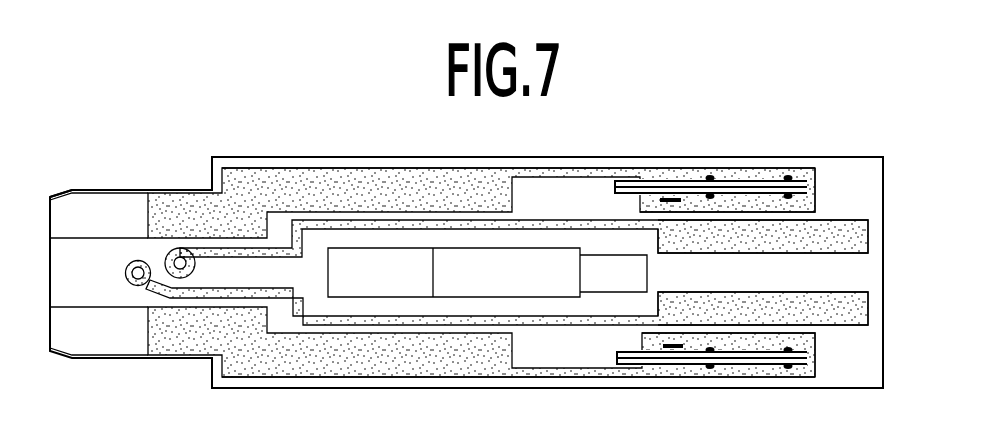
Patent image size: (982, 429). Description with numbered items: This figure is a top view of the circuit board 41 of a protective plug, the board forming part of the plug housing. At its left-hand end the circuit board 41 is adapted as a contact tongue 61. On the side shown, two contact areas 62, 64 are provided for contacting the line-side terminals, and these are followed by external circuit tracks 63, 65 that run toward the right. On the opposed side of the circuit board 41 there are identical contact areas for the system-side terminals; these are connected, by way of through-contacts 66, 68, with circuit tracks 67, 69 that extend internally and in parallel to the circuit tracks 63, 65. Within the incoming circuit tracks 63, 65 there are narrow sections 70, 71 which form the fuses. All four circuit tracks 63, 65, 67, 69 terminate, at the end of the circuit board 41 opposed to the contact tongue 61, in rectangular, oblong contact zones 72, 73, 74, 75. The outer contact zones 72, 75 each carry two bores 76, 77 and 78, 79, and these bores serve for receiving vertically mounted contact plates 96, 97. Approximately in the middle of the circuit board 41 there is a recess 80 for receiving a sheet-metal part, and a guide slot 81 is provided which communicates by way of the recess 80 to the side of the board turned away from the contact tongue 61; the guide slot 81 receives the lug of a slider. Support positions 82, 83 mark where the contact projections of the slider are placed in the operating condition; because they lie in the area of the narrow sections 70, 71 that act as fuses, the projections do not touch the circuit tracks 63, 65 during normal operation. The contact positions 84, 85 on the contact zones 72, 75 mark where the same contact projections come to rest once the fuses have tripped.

The circuit board 41 is at (853, 158).
The contact tongue 61 is at (170, 160).
The contact area 62 is at (100, 203).
The external circuit track 63 is at (298, 187).
The contact area 64 is at (110, 338).
The external circuit track 65 is at (315, 363).
The through-contact 66 is at (193, 268).
The circuit track 67 is at (373, 221).
The through-contact 68 is at (127, 280).
The circuit track 69 is at (370, 317).
The narrow section 70 is at (570, 168).
The narrow section 71 is at (555, 374).
The contact zone 72 is at (812, 167).
The contact zone 73 is at (848, 221).
The contact zone 74 is at (848, 313).
The contact zone 75 is at (808, 372).
The bore 76 is at (712, 176).
The bore 77 is at (787, 176).
The bore 78 is at (710, 367).
The bore 79 is at (792, 367).
The recess 80 is at (513, 285).
The guide slot 81 is at (595, 272).
The support position 82 is at (624, 199).
The support position 83 is at (627, 343).
The contact position 84 is at (670, 198).
The contact position 85 is at (672, 348).
The contact plate 96 is at (740, 185).
The contact plate 97 is at (748, 365).